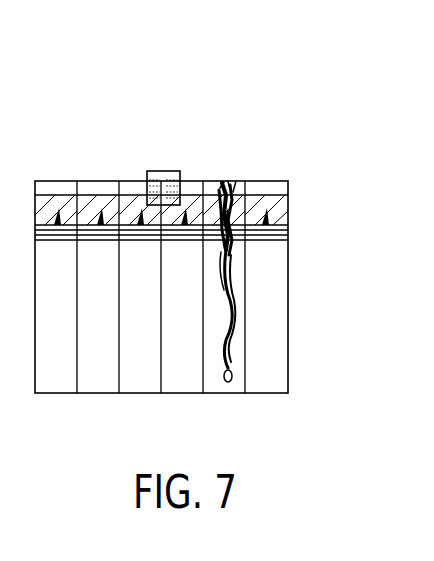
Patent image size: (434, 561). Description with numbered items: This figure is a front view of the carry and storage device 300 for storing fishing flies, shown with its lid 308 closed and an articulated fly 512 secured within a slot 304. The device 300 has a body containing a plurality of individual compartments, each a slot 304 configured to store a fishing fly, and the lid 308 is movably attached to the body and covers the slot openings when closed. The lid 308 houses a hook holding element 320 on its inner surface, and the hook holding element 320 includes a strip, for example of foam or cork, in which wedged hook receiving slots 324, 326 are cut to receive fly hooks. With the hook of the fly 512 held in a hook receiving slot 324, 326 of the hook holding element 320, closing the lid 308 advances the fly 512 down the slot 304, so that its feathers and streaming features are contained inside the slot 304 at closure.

The carry and storage device 300 is at (143, 90).
The slot 304 is at (235, 387).
The lid 308 is at (277, 220).
The hook holding element 320 is at (143, 200).
The hook receiving slot 324 is at (57, 210).
The hook receiving slot 326 is at (100, 210).
The articulated fly 512 is at (235, 300).